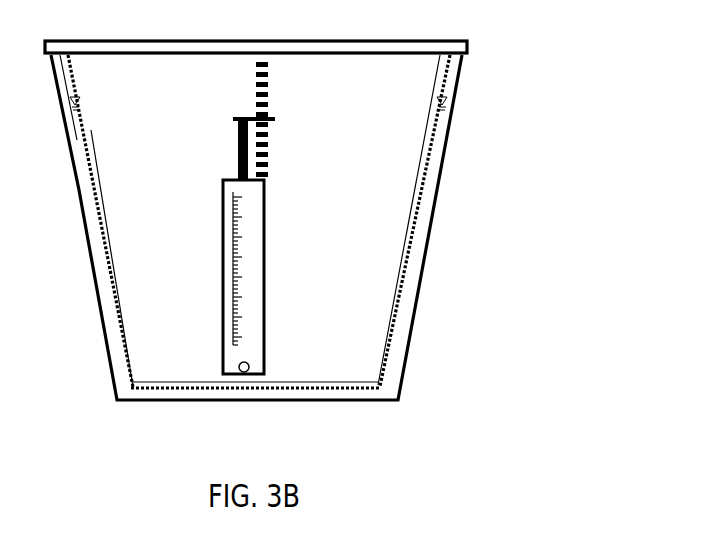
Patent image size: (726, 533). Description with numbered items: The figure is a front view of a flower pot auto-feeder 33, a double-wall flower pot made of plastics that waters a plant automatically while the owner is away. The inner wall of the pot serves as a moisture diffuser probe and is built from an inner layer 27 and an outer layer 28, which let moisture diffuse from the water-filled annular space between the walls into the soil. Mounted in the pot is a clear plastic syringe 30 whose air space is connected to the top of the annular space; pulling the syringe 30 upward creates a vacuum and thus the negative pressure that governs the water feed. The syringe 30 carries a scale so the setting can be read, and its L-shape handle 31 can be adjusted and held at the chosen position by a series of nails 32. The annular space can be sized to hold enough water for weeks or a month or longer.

The inner layer 27 is at (196, 177).
The outer layer 28 is at (210, 333).
The clear plastic syringe 30 is at (355, 316).
The L-shape handle 31 is at (367, 128).
The series of nails 32 is at (365, 216).
The flower pot auto-feeder 33 is at (552, 136).